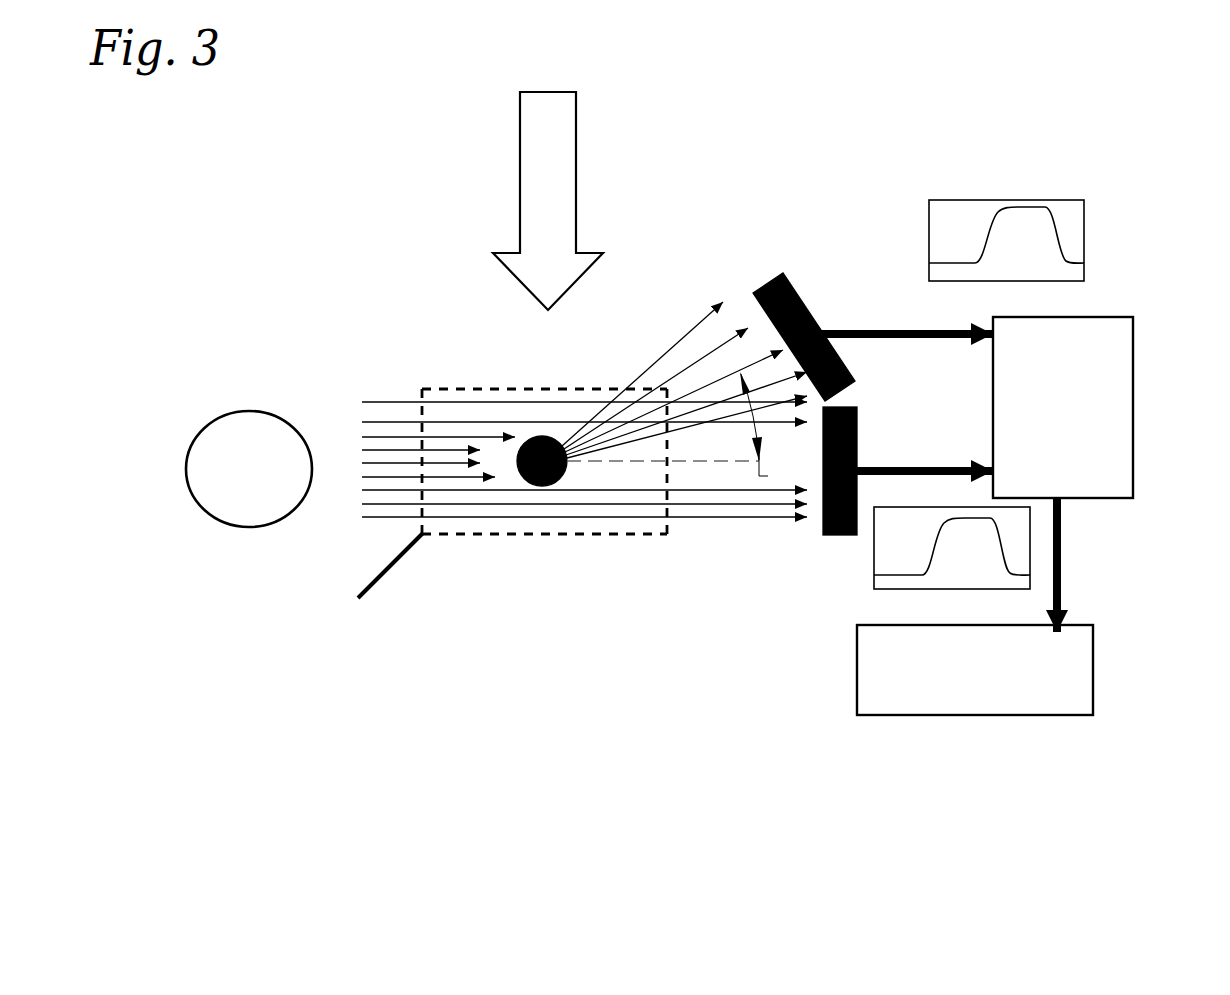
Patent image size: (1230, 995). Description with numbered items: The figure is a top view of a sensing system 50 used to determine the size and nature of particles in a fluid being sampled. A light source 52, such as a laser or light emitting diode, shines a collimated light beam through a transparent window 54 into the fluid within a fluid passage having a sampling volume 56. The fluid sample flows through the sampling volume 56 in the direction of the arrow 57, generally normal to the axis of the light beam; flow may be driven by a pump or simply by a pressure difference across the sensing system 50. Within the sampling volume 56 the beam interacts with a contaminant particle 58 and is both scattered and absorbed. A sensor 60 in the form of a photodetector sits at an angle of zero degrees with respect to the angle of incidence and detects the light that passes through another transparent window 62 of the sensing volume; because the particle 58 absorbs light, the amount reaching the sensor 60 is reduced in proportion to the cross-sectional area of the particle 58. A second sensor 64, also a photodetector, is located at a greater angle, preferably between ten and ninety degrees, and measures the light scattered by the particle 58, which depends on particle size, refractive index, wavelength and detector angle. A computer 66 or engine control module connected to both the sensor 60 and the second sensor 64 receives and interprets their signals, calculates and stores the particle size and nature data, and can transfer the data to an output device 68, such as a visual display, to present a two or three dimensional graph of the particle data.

The sensing system 50 is at (405, 676).
The light source 52 is at (250, 410).
The transparent window 54 is at (422, 400).
The sampling volume 56 is at (385, 575).
The arrow 57 is at (520, 212).
The contaminant particle 58 is at (548, 487).
The sensor 60 is at (840, 535).
The transparent window 62 is at (667, 533).
The second sensor 64 is at (790, 281).
The computer 66 is at (1133, 393).
The output device 68 is at (1093, 665).